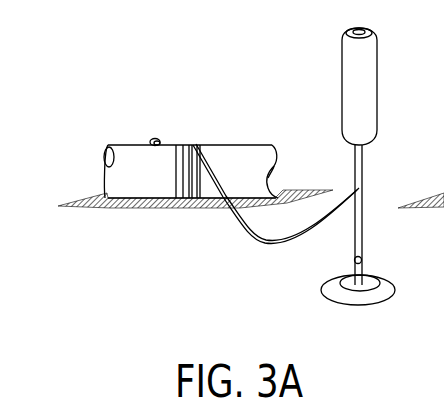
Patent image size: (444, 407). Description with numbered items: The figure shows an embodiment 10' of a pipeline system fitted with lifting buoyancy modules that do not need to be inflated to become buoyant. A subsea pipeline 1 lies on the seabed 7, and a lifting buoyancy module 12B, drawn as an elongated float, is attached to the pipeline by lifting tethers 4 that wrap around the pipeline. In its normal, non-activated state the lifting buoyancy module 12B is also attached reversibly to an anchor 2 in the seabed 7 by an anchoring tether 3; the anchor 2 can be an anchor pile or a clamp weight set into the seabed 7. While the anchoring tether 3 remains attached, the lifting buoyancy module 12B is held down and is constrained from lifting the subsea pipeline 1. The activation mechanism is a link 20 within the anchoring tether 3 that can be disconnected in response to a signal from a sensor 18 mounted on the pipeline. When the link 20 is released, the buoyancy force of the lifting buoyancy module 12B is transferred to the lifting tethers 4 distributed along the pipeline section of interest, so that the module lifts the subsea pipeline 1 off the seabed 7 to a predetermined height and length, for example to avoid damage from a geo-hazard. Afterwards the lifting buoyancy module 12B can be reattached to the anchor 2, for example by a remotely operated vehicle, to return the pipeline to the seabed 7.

The pipeline system embodiment 10' is at (172, 48).
The subsea pipeline 1 is at (134, 165).
The sensor 18 is at (155, 140).
The lifting tethers 4 is at (213, 163).
The seabed 7 is at (73, 200).
The lifting buoyancy module 12B is at (372, 80).
The anchoring tether 3 is at (363, 247).
The link 20 is at (355, 261).
The anchor 2 is at (390, 288).